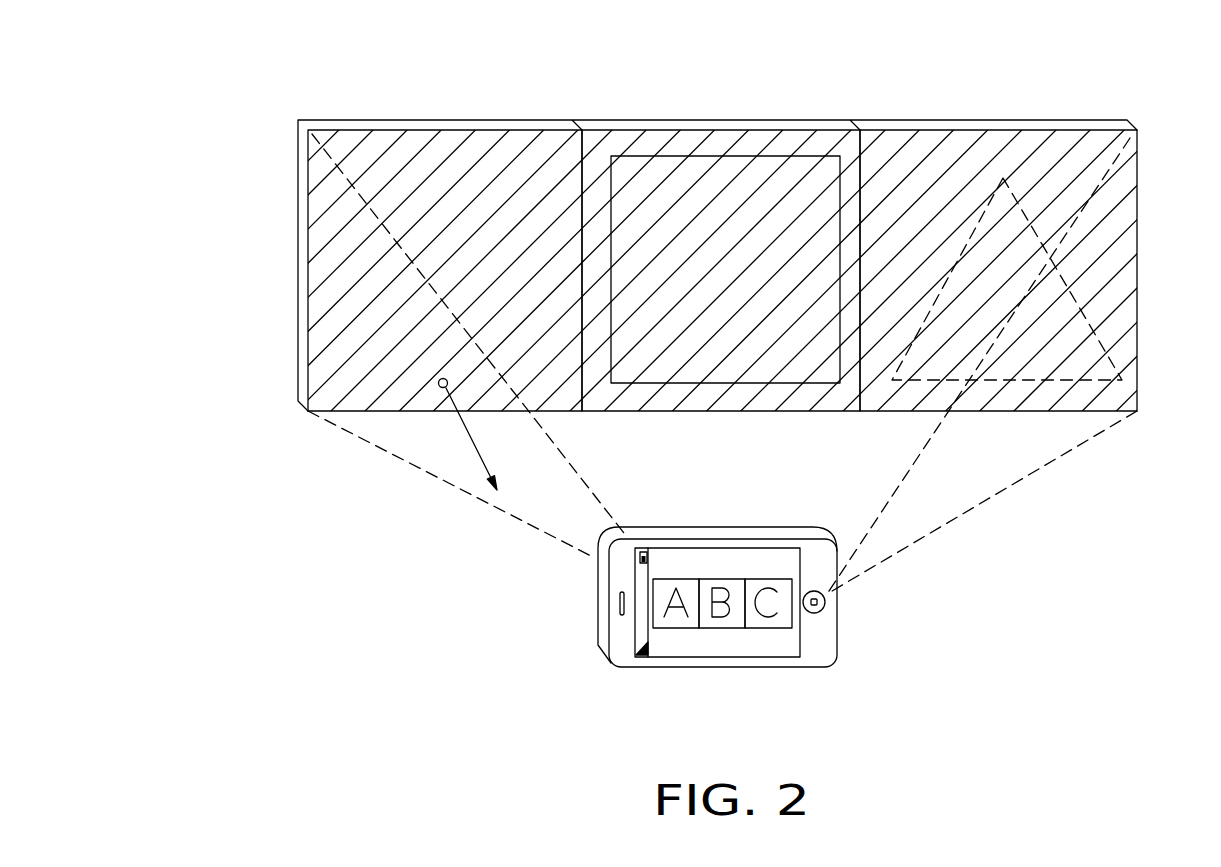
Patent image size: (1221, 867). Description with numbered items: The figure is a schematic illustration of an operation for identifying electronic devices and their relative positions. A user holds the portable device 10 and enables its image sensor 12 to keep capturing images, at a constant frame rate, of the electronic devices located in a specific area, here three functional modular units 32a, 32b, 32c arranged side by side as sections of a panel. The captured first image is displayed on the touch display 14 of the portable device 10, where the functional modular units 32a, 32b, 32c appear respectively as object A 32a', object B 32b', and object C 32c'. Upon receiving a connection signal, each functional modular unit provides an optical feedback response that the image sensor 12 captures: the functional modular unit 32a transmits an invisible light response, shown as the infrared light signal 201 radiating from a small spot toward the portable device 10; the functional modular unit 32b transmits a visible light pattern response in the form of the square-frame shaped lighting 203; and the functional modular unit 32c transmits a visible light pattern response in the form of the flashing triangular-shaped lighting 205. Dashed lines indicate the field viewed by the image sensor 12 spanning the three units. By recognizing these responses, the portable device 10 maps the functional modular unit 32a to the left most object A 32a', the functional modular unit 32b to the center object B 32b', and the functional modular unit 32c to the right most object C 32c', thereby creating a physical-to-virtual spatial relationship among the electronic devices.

The portable device 10 is at (620, 655).
The image sensor 12 is at (828, 598).
The touch display 14 is at (783, 643).
The infrared light signal 201 is at (440, 381).
The square-frame shaped lighting 203 is at (703, 155).
The flashing triangular-shaped lighting 205 is at (1027, 207).
The functional modular unit 32a is at (722, 238).
The functional modular unit 32b is at (722, 249).
The functional modular unit 32c is at (761, 247).
The object A 32a' is at (668, 536).
The object B 32b' is at (722, 669).
The object C 32c' is at (770, 536).